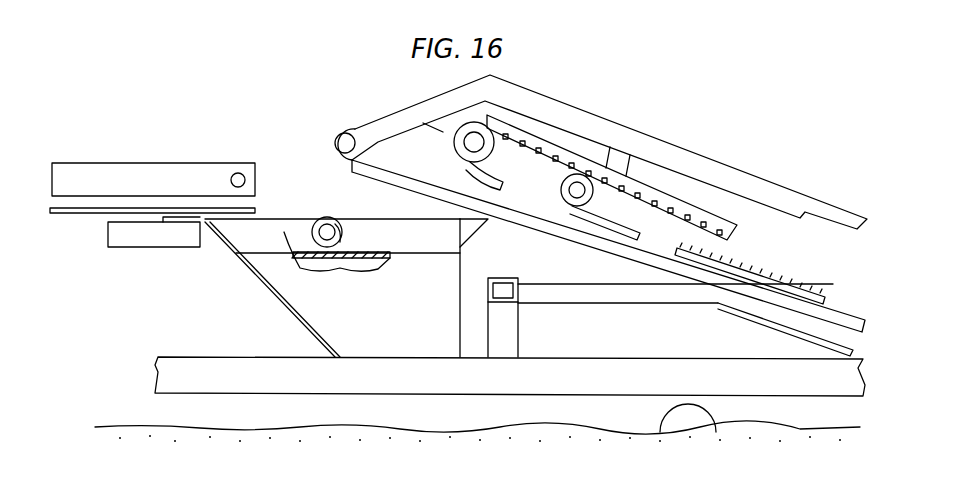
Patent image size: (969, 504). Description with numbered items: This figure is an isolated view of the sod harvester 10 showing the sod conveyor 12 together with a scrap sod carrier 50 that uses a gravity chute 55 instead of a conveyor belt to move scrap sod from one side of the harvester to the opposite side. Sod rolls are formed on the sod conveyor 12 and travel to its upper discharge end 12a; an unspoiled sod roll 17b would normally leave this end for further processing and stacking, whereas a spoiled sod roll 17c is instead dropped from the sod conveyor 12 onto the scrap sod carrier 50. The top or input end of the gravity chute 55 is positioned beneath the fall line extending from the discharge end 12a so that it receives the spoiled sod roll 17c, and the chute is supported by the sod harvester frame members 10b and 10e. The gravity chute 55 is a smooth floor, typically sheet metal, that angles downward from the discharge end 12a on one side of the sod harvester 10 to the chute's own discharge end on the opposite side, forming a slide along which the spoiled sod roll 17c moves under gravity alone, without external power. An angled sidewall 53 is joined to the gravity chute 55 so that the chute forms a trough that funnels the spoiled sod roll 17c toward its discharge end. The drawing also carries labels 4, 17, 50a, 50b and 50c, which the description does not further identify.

The upper unit 4 is at (175, 177).
The sod harvester 10 is at (696, 124).
The sod harvester frame member 10b is at (608, 380).
The sod harvester frame member 10e is at (140, 232).
The sod conveyor 12 is at (712, 157).
The upper discharge end 12a is at (300, 200).
The conveyor 17 is at (710, 432).
The unspoiled sod roll 17b is at (488, 132).
The spoiled sod roll 17c is at (327, 224).
The scrap sod carrier 50 is at (147, 282).
The table portion 50a is at (253, 278).
The table inclined portion 50b is at (318, 296).
The post 50c is at (485, 310).
The angled sidewall 53 is at (470, 238).
The gravity chute 55 is at (365, 237).